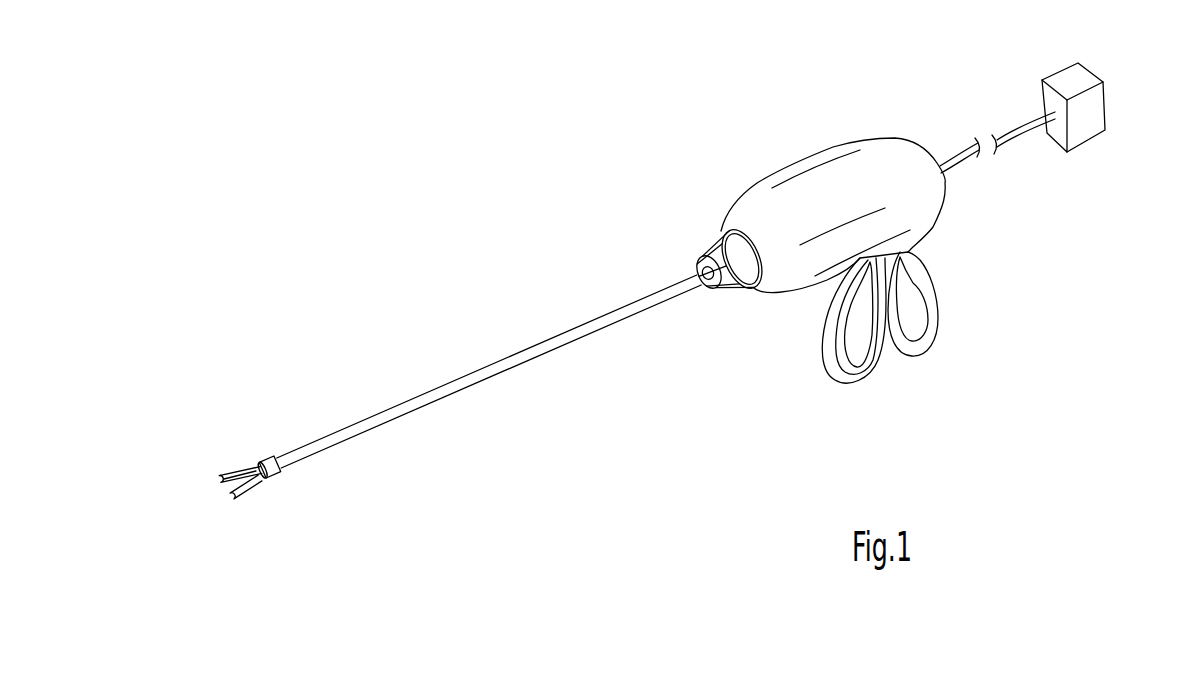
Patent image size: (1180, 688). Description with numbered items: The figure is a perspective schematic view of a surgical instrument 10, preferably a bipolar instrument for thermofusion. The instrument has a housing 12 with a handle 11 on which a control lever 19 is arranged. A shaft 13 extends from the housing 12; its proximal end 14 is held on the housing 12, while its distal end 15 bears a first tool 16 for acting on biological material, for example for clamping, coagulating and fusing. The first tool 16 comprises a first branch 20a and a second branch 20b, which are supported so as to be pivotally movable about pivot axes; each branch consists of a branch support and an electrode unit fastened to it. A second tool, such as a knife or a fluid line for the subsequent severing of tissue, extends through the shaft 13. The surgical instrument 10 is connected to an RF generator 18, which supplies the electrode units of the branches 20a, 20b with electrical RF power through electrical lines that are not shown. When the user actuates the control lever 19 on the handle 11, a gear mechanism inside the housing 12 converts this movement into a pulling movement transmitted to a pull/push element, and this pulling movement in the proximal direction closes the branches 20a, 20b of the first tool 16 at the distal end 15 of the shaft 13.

The surgical instrument 10 is at (693, 208).
The handle 11 is at (923, 293).
The housing 12 is at (833, 187).
The shaft 13 is at (452, 378).
The proximal end 14 is at (684, 261).
The distal end 15 is at (278, 456).
The first tool 16 is at (233, 457).
The RF generator 18 is at (1083, 74).
The control lever 19 is at (827, 364).
The first branch 20a is at (235, 500).
The second branch 20b is at (222, 473).